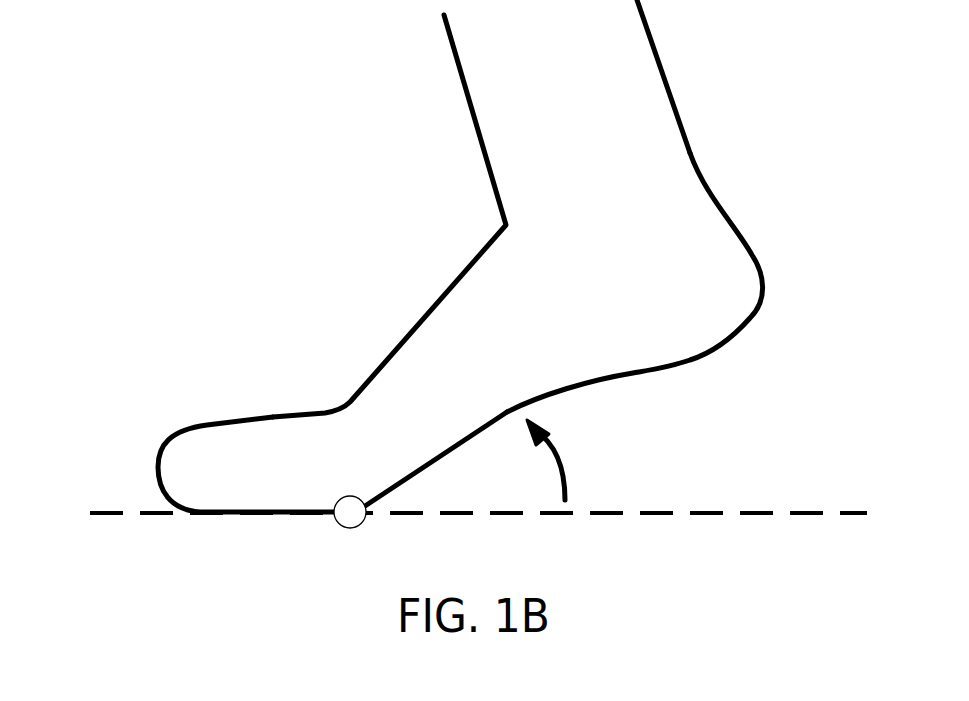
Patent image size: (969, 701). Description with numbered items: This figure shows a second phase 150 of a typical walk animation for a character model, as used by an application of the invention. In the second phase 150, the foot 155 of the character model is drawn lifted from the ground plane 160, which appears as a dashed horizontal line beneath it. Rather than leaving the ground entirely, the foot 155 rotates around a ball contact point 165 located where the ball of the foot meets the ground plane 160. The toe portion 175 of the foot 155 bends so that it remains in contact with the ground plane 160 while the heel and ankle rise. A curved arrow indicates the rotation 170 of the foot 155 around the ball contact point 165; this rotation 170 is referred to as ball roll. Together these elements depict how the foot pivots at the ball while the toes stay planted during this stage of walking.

The second phase 150 is at (424, 208).
The foot 155 is at (635, 282).
The ground plane 160 is at (128, 508).
The ball contact point 165 is at (352, 513).
The rotation 170 is at (548, 443).
The toe portion 175 is at (273, 415).